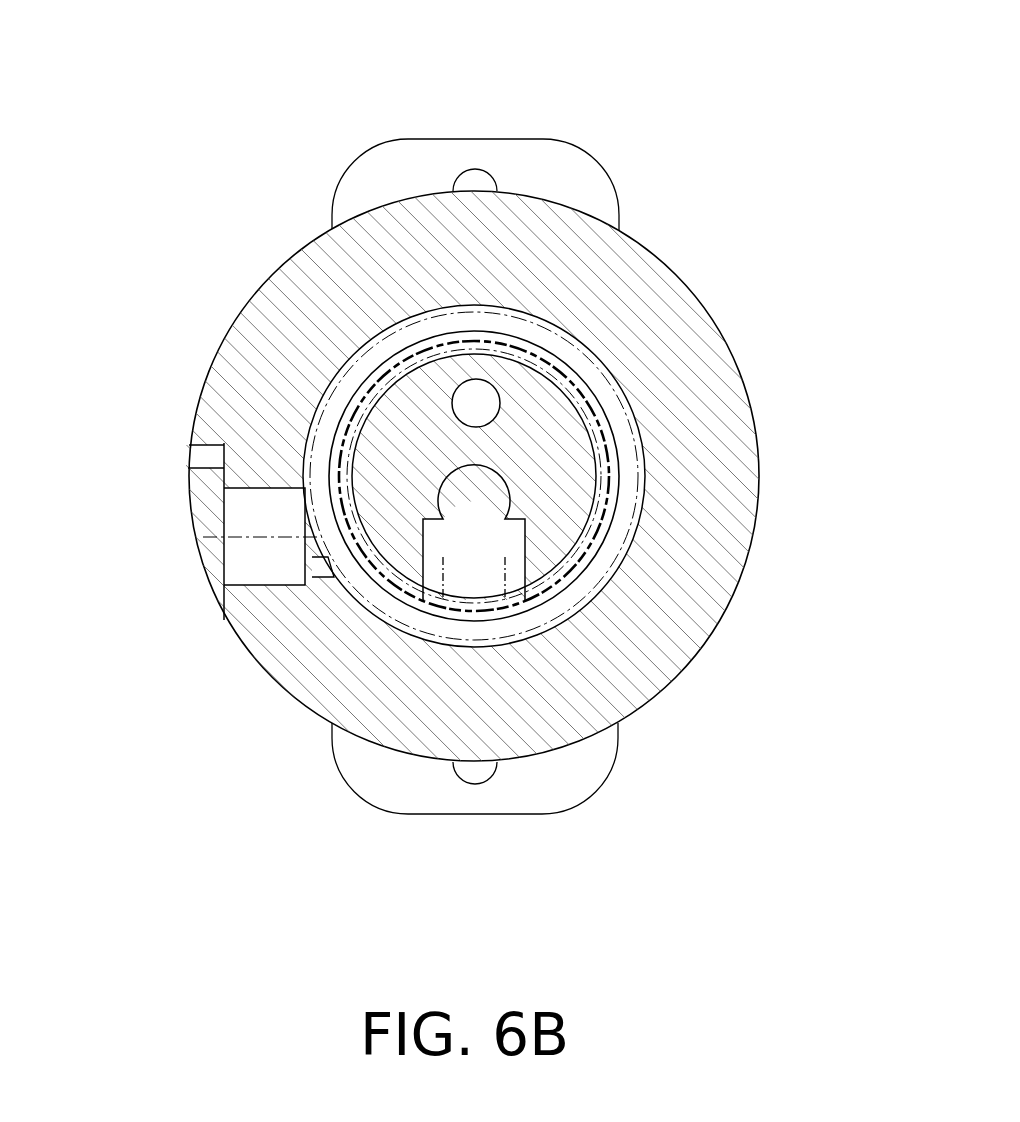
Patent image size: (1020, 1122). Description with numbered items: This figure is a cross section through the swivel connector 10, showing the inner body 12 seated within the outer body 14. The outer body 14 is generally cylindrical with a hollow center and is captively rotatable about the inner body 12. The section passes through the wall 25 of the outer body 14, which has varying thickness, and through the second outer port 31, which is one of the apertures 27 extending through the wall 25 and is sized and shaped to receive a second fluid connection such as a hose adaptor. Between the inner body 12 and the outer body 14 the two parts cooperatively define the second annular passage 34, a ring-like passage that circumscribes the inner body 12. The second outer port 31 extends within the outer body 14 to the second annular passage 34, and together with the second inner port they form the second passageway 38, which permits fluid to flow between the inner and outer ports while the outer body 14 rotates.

The swivel connector 10 is at (706, 140).
The inner body 12 is at (488, 470).
The outer body 14 is at (655, 600).
The wall 25 is at (327, 305).
The apertures 27 is at (224, 565).
The second outer port 31 is at (248, 522).
The second annular passage 34 is at (597, 387).
The second passageway 38 is at (475, 540).